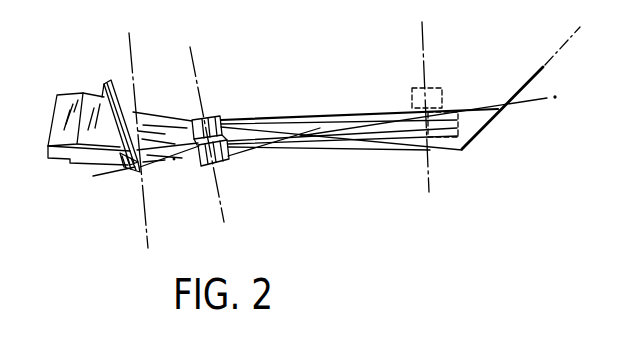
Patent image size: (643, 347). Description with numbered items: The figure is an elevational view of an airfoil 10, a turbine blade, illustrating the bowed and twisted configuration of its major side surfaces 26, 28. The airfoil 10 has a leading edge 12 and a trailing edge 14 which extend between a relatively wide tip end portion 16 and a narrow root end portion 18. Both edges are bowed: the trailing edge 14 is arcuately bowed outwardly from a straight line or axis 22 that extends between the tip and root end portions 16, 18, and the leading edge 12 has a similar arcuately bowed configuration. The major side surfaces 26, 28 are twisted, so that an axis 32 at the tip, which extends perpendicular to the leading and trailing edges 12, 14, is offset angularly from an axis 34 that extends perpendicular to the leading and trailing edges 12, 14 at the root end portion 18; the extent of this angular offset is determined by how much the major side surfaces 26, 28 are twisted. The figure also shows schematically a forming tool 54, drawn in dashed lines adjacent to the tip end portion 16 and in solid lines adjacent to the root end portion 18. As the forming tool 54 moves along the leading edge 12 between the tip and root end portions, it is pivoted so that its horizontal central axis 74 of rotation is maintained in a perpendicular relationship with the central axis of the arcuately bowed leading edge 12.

The airfoil 10 is at (586, 78).
The leading edge 12 is at (368, 147).
The trailing edge 14 is at (268, 128).
The tip end portion 16 is at (486, 124).
The root end portion 18 is at (117, 99).
The axis 22 is at (268, 152).
The major side surface 26 is at (398, 138).
The major side surface 28 is at (240, 126).
The axis at the tip 32 is at (526, 70).
The axis at the root 34 is at (143, 210).
The forming tool 54 is at (206, 163).
The axis of rotation 74 is at (193, 70).